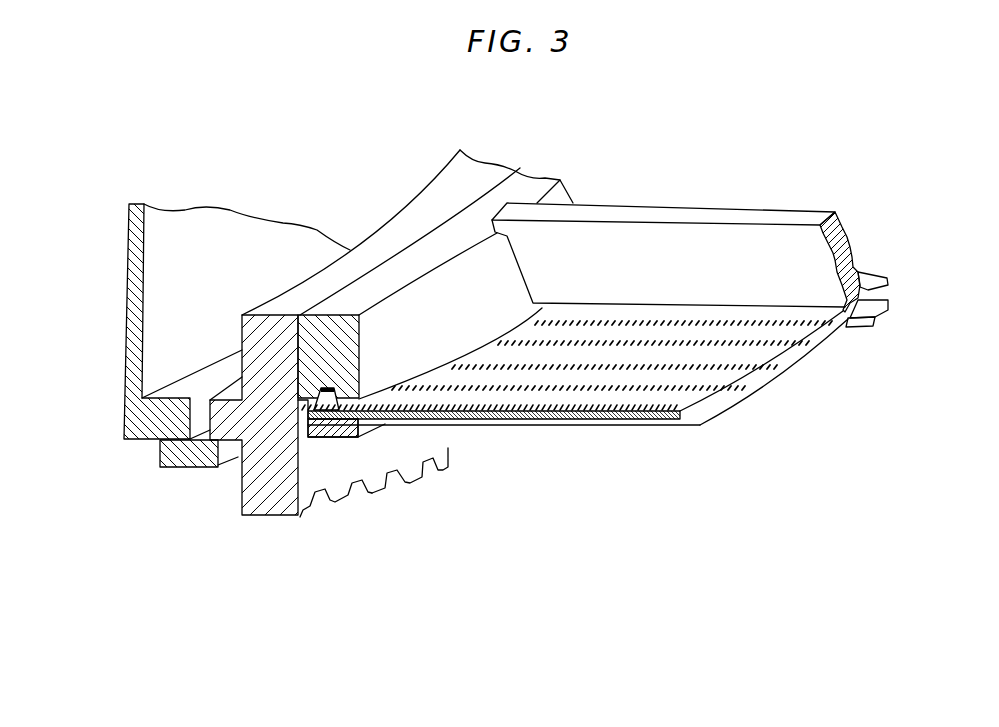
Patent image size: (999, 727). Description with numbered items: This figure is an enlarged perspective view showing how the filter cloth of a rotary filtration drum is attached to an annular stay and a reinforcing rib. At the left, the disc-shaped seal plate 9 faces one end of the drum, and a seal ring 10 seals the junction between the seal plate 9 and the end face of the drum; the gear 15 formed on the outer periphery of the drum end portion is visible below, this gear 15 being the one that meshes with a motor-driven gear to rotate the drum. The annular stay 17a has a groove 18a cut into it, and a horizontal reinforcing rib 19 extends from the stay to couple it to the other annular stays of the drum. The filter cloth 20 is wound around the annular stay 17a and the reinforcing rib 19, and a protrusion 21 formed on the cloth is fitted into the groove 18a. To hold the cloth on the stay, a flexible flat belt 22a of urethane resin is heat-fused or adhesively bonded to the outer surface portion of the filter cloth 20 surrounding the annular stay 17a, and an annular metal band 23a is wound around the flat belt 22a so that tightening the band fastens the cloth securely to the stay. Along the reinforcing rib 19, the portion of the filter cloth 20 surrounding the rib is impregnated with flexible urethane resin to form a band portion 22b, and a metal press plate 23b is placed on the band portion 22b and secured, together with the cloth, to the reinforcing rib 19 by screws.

The seal plate 9 is at (127, 283).
The seal ring 10 is at (185, 468).
The gear 15 is at (374, 497).
The annular stay 17a is at (567, 183).
The groove 18a is at (316, 380).
The reinforcing rib 19 is at (680, 212).
The filter cloth 20 is at (862, 272).
The protrusion 21 is at (345, 375).
The flat belt 22a is at (307, 443).
The band portion 22b is at (885, 288).
The annular metal band 23a is at (372, 495).
The press plate 23b is at (862, 320).